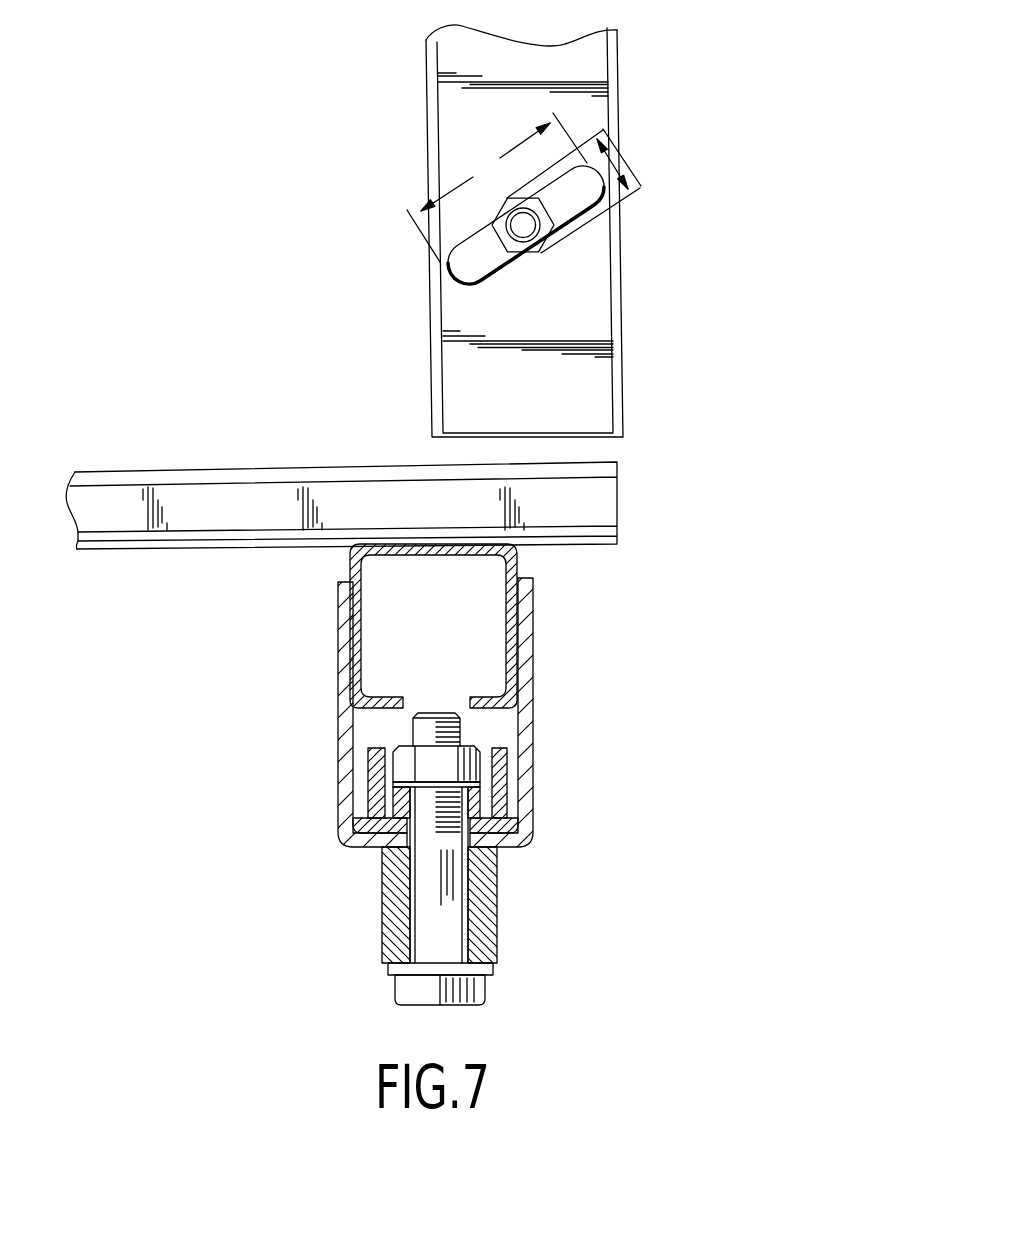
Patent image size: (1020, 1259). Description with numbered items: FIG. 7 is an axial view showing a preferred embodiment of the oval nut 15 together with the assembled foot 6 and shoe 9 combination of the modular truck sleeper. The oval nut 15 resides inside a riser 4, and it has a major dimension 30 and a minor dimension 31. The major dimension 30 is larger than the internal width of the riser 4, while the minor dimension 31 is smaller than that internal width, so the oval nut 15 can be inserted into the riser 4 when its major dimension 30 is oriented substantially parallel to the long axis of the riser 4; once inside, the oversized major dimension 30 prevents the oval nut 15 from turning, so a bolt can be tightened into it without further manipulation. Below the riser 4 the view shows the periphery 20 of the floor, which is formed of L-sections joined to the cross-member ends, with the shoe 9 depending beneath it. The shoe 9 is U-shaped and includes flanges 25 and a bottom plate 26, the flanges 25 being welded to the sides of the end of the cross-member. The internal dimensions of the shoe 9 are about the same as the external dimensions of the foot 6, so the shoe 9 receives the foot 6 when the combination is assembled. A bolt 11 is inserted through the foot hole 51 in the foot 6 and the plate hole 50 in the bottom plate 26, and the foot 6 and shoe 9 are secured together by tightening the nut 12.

The riser 4 is at (618, 108).
The oval nut 15 is at (453, 278).
The major dimension 30 is at (497, 187).
The minor dimension 31 is at (617, 153).
The periphery 20 is at (170, 466).
The shoe 9 is at (448, 732).
The flanges 25 is at (338, 735).
The bottom plate 26 is at (373, 848).
The foot 6 is at (508, 775).
The foot hole 51 is at (505, 826).
The nut 12 is at (385, 762).
The plate hole 50 is at (497, 845).
The bolt 11 is at (485, 983).